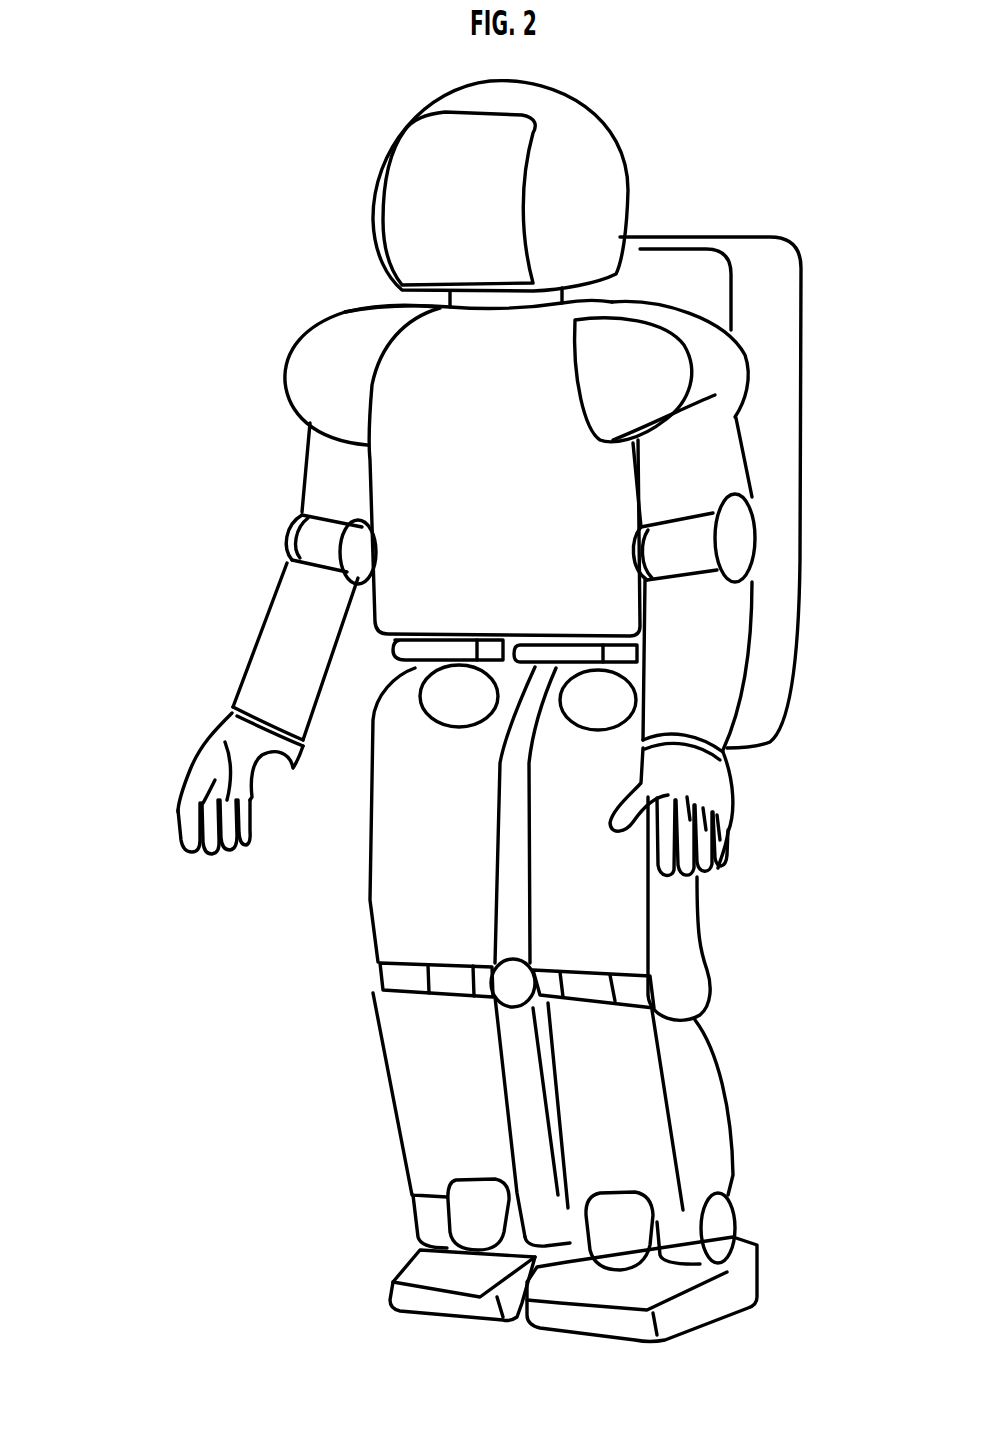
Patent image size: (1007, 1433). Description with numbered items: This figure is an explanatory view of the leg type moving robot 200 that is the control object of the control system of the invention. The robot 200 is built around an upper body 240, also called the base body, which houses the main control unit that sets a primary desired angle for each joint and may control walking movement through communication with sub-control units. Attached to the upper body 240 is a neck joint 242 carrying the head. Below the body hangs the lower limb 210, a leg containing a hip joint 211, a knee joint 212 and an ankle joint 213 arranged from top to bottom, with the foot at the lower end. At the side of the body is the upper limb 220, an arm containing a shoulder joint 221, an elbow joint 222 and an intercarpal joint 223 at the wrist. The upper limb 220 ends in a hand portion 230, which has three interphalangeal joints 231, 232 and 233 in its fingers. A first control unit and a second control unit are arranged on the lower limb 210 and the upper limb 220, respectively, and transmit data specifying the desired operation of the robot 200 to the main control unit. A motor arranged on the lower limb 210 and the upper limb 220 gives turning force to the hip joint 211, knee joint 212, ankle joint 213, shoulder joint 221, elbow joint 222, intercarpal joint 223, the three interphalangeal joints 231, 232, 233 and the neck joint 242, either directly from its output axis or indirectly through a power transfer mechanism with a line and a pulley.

The leg type moving robot 200 is at (718, 128).
The lower limb 210 is at (392, 648).
The hip joint 211 is at (416, 673).
The knee joint 212 is at (370, 996).
The ankle joint 213 is at (400, 1196).
The upper limb 220 is at (353, 305).
The shoulder joint 221 is at (279, 347).
The elbow joint 222 is at (278, 512).
The intercarpal joint 223 is at (226, 685).
The hand portion 230 is at (217, 713).
The interphalangeal joint 231 is at (200, 762).
The interphalangeal joint 232 is at (188, 797).
The interphalangeal joint 233 is at (190, 828).
The upper body 240 is at (539, 495).
The neck joint 242 is at (416, 300).